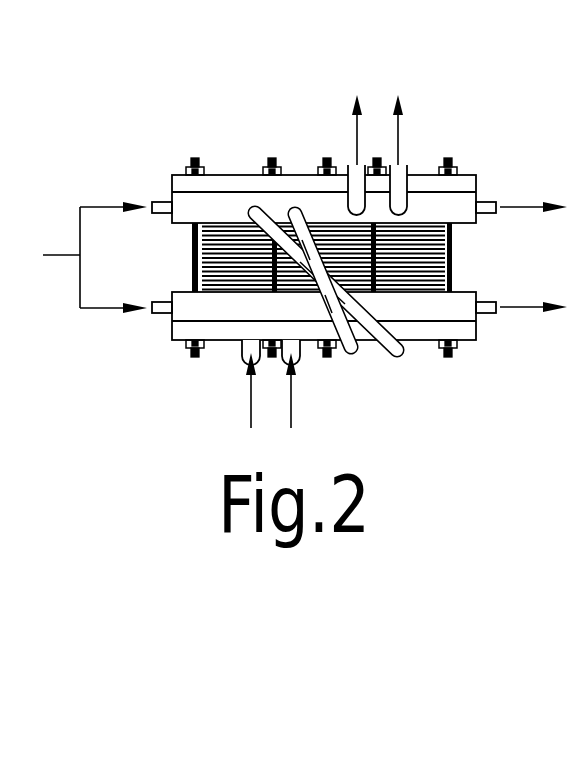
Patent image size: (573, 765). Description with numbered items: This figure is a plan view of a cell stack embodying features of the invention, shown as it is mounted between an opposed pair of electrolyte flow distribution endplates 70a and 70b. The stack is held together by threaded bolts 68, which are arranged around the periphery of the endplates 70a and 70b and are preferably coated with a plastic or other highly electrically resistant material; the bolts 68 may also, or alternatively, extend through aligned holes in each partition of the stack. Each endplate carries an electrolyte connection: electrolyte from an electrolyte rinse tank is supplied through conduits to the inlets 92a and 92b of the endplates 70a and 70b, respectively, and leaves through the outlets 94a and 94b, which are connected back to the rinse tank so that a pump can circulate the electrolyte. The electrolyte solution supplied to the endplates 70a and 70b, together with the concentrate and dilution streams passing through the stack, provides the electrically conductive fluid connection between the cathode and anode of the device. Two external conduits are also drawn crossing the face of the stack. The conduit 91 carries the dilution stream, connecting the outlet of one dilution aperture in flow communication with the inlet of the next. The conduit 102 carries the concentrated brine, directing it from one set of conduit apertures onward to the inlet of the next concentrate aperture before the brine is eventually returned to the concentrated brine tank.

The threaded bolts 68 is at (195, 157).
The electrolyte flow distribution endplate 70a is at (462, 215).
The electrolyte flow distribution endplate 70b is at (463, 314).
The inlet 92a is at (165, 201).
The inlet 92b is at (162, 314).
The outlet 94a is at (487, 201).
The outlet 94b is at (483, 302).
The conduit 91 is at (396, 358).
The conduit 102 is at (357, 352).